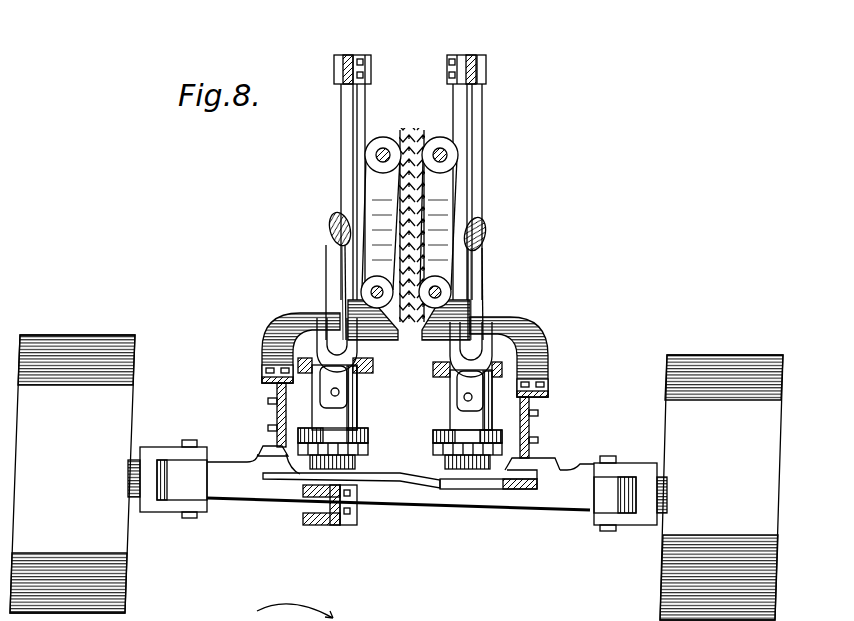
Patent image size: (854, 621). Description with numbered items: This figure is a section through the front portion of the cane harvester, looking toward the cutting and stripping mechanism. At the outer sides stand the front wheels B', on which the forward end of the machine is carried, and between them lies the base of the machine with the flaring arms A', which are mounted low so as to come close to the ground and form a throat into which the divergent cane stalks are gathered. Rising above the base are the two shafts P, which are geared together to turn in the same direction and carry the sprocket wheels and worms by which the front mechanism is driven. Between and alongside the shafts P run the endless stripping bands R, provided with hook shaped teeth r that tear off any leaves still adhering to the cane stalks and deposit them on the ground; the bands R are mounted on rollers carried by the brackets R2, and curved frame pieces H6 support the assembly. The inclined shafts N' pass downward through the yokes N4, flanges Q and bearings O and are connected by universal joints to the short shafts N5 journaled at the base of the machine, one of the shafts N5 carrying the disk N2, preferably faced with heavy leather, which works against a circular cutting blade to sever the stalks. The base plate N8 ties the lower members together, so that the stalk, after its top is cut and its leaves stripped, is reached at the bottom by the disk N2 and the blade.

The shaft P is at (463, 108).
The hook shaped teeth r is at (430, 146).
The stripping band R is at (462, 202).
The roller brackets R2 is at (428, 303).
The shaft N' is at (402, 275).
The curved brackets H6 is at (526, 338).
The flaring arm A' is at (393, 426).
The yoke columns N4 is at (455, 405).
The flanges Q is at (433, 367).
The short shaft N5 is at (470, 440).
The bearings O is at (445, 462).
The base plate N8 is at (290, 475).
The disk N2 is at (437, 484).
The front wheel B' is at (396, 477).